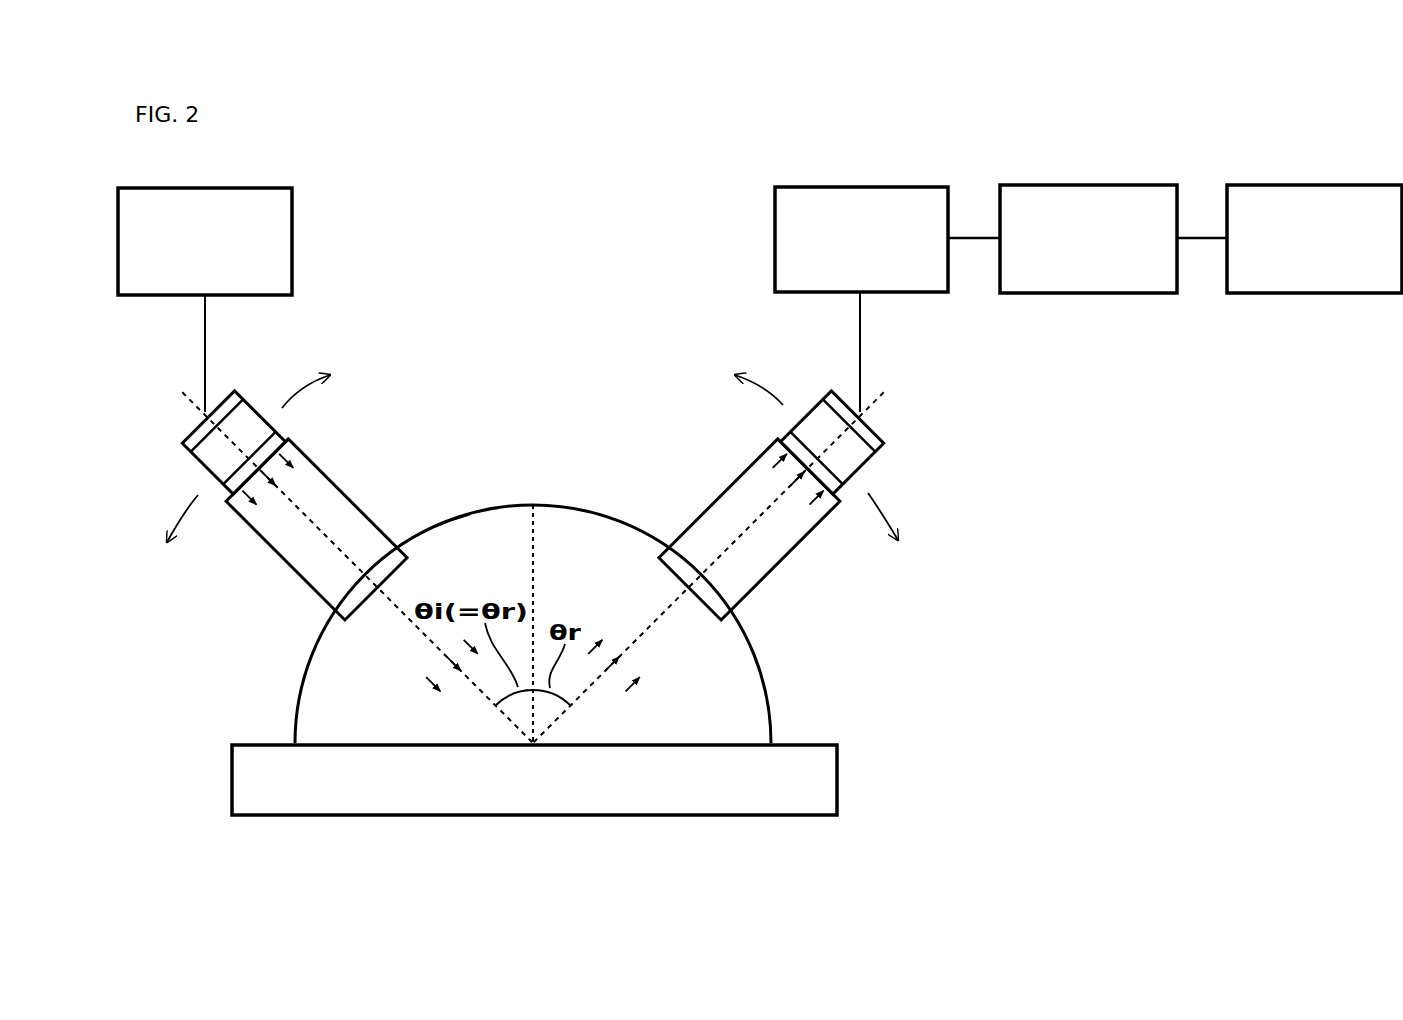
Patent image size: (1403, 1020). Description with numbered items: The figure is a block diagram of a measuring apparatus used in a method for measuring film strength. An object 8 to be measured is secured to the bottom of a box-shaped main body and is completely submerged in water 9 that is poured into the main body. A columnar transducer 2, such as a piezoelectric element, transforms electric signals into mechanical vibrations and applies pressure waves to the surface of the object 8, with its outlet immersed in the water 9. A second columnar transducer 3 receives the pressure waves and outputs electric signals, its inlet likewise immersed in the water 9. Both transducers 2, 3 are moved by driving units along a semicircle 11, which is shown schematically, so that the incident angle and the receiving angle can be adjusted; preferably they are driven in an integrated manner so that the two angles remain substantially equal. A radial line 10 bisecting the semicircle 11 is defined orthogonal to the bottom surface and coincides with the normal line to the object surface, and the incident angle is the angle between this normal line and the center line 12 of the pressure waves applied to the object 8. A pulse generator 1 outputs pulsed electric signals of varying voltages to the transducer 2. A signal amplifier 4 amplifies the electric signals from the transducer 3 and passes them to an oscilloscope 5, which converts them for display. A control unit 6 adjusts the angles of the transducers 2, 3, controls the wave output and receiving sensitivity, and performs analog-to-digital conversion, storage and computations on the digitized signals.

The pulse generator 1 is at (238, 188).
The transducer 2 is at (302, 500).
The transducer 3 is at (755, 494).
The signal amplifier 4 is at (897, 187).
The oscilloscope 5 is at (1114, 185).
The control unit 6 is at (1331, 185).
The object to be measured 8 is at (830, 778).
The water 9 is at (571, 522).
The radial line 10 is at (533, 535).
The semicircle 11 is at (430, 528).
The center line 12 is at (408, 623).